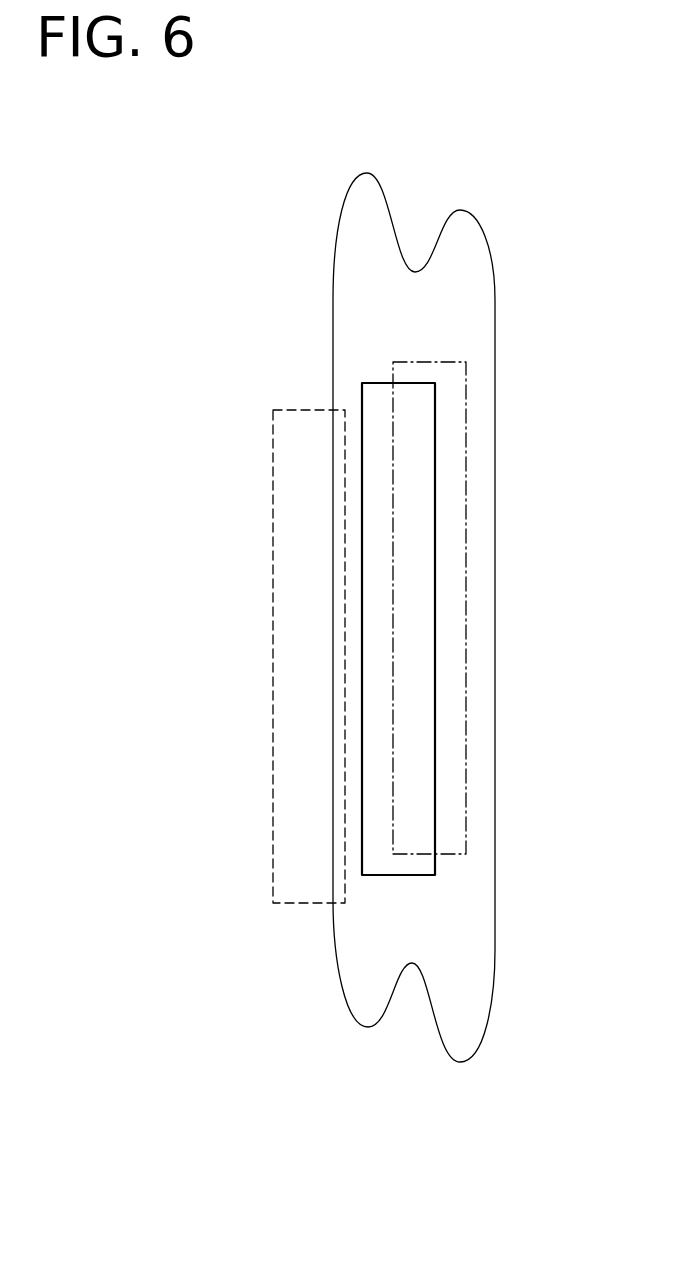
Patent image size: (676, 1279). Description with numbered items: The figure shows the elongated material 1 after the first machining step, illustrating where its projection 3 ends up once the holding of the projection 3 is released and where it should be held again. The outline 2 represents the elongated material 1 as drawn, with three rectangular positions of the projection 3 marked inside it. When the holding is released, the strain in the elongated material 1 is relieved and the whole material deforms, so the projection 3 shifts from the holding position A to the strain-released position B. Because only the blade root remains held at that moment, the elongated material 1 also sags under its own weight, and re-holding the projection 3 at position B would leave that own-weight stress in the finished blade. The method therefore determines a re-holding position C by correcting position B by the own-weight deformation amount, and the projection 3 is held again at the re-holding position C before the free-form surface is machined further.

The elongated material 1 is at (411, 164).
The main body / absorbent body 2 is at (480, 222).
The projection 3 is at (378, 383).
The holding position A is at (301, 906).
The strain-released position B is at (397, 883).
The re-holding position C is at (449, 860).